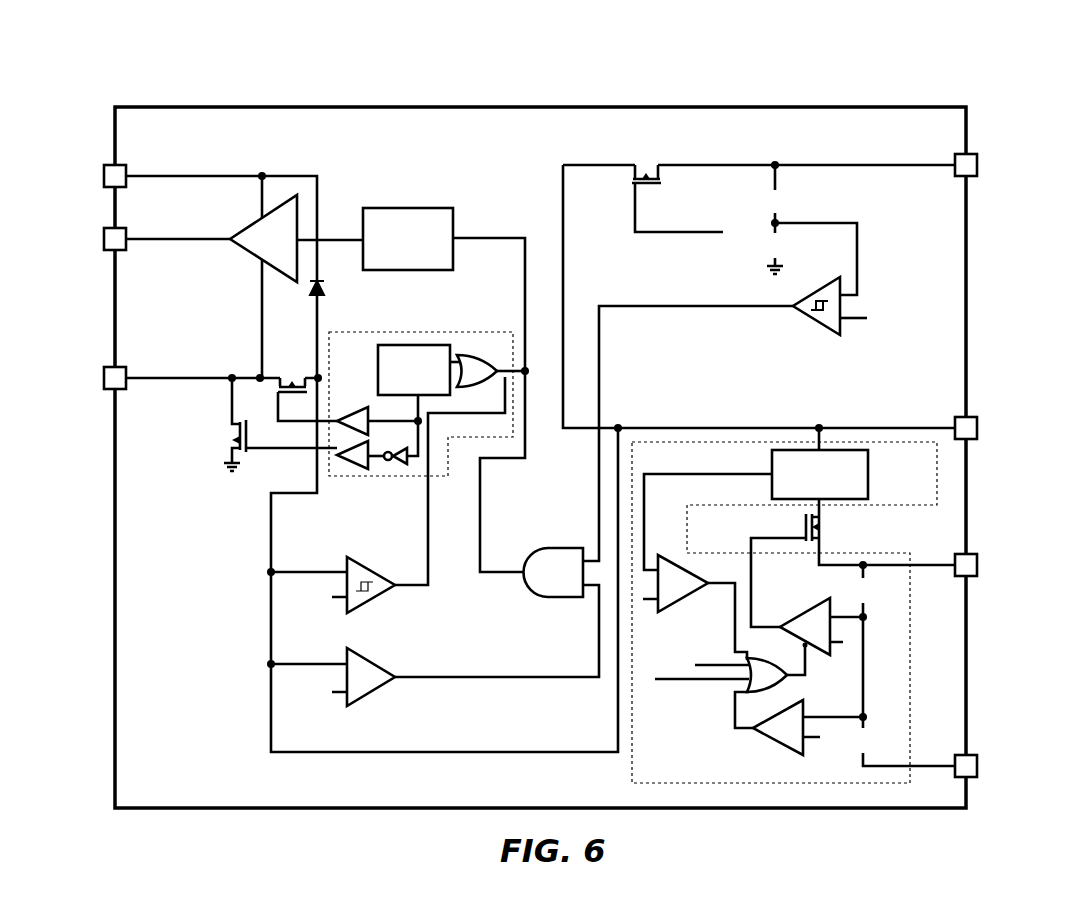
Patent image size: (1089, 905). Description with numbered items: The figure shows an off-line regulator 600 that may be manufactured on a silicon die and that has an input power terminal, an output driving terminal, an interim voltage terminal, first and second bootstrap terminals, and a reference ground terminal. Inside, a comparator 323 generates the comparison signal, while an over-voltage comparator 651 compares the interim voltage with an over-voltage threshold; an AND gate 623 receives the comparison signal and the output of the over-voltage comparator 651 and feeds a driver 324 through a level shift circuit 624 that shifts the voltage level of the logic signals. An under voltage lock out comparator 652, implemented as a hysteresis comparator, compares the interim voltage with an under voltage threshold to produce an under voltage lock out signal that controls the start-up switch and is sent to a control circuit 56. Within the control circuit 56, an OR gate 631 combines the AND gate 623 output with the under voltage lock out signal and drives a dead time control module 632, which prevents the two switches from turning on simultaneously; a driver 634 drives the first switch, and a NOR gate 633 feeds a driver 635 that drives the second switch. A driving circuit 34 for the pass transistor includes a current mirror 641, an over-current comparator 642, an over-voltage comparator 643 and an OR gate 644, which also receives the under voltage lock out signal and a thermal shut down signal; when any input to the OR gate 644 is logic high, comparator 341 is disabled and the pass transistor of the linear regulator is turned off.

The off-line regulator 600 is at (966, 84).
The driver 324 is at (248, 227).
The level shift circuit 624 is at (419, 208).
The control circuit 56 is at (397, 334).
The dead time control module 632 is at (377, 364).
The OR gate 631 is at (478, 356).
The driver 634 is at (348, 412).
The driver 635 is at (344, 470).
The NOR gate 633 is at (398, 466).
The under voltage lock out comparator 652 is at (373, 606).
The over-voltage comparator 651 is at (372, 703).
The AND gate 623 is at (530, 599).
The comparator 323 is at (816, 321).
The driving circuit 34 is at (700, 772).
The current mirror 641 is at (868, 465).
The over-current comparator 642 is at (690, 595).
The comparator 341 is at (800, 619).
The over-voltage comparator 643 is at (774, 739).
The OR gate 644 is at (768, 680).